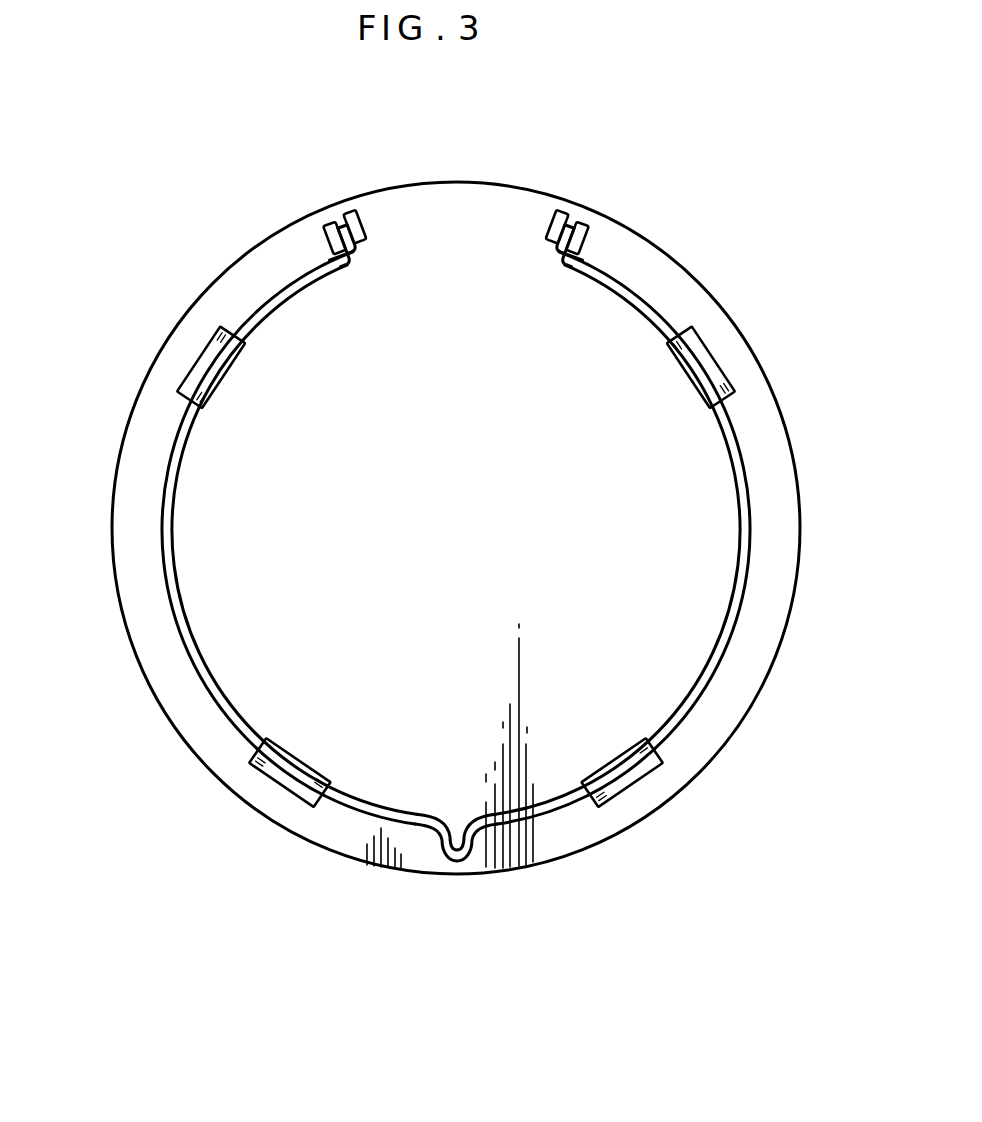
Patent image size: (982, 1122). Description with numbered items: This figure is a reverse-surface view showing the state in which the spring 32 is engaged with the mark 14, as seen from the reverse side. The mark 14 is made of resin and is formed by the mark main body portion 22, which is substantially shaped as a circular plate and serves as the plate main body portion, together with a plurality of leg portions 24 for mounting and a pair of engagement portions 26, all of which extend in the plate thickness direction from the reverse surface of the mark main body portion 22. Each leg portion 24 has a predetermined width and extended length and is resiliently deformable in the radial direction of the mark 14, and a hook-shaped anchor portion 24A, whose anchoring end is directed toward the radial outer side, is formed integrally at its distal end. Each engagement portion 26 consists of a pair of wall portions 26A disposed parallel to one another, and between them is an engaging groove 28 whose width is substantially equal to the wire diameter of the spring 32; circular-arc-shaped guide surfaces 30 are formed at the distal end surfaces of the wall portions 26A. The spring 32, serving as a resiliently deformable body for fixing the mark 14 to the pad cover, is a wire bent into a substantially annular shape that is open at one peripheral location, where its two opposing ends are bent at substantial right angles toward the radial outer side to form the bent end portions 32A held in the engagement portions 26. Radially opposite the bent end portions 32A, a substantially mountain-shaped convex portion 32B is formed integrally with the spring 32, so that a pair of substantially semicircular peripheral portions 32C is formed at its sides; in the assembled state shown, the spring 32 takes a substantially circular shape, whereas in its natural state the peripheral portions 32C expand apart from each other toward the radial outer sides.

The mark 14 is at (152, 884).
The mark main body portion 22 is at (128, 578).
The leg portion for mounting 24 is at (205, 340).
The anchor portion 24A is at (195, 359).
The engagement portion 26 is at (352, 212).
The wall portion 26A is at (362, 222).
The engaging groove 28 is at (330, 240).
The guide surface 30 is at (364, 226).
The spring 32 is at (178, 642).
The bent end portion 32A is at (359, 252).
The convex portion 32B is at (456, 866).
The peripheral portion 32C is at (165, 484).